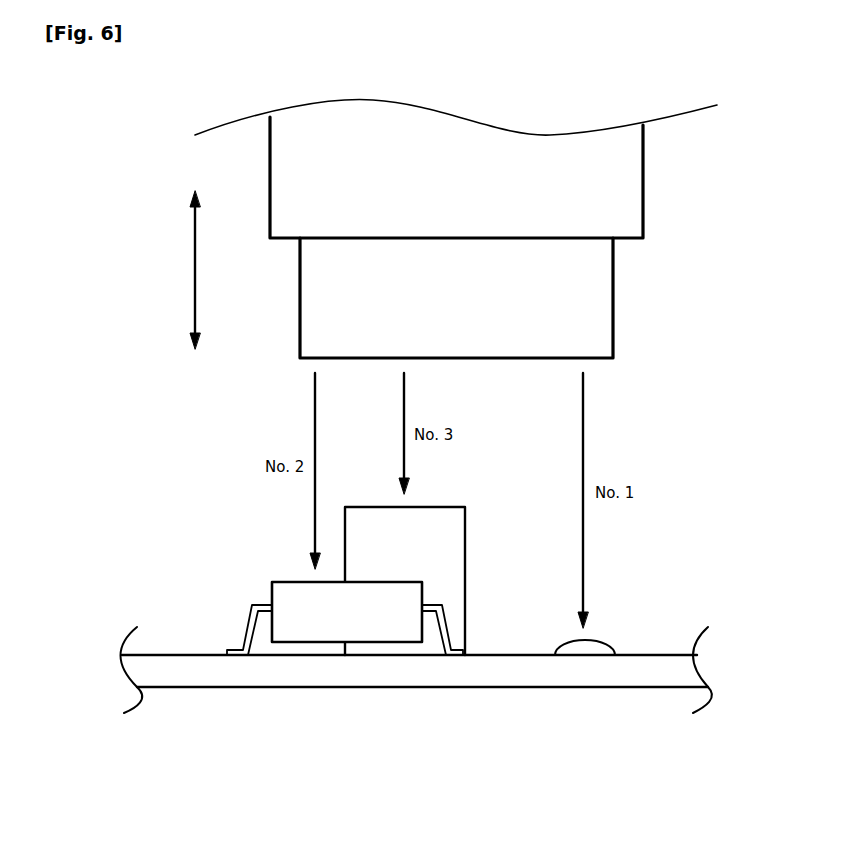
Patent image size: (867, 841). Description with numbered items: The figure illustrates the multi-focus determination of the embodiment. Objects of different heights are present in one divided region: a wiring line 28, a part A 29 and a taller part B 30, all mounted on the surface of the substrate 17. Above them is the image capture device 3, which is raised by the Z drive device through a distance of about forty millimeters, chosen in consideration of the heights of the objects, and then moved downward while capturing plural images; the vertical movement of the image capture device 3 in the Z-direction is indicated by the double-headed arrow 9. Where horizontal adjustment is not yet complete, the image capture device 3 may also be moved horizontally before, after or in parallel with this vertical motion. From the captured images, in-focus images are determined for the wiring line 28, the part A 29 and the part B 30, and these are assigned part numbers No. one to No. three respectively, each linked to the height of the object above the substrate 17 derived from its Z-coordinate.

The image capture device 3 is at (613, 298).
The vertical movement direction 9 is at (193, 268).
The substrate 17 is at (195, 678).
The wiring line 28 is at (613, 650).
The part A 29 is at (272, 582).
The part B 30 is at (345, 528).